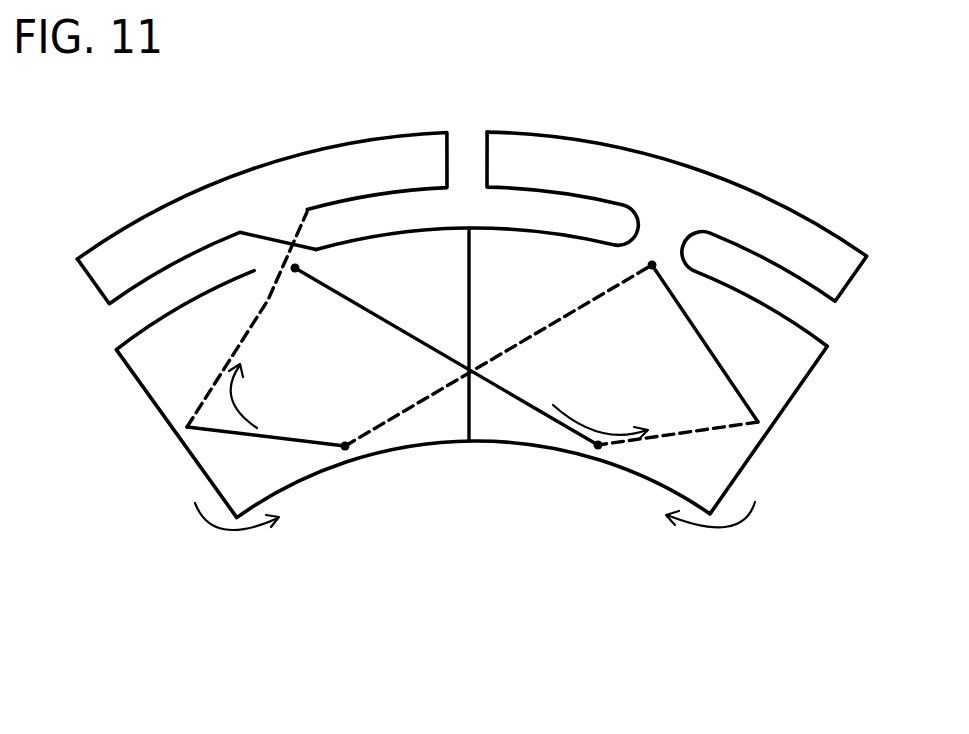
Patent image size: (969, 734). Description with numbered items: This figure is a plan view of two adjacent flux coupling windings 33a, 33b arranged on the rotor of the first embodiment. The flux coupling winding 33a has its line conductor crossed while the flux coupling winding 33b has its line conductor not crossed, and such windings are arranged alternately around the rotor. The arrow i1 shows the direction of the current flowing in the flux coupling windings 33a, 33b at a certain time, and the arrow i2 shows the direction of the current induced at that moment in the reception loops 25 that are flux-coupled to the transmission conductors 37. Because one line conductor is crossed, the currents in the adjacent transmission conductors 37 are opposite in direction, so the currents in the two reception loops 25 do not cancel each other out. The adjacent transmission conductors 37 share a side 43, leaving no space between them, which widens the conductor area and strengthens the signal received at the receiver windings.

The flux coupling winding 33a is at (190, 122).
The flux coupling winding 33b is at (773, 122).
The transmission conductor 37 is at (318, 478).
The reception loop 25 is at (383, 440).
The side 43 is at (470, 403).
The current direction arrow i1 is at (213, 528).
The current direction arrow i2 is at (232, 400).